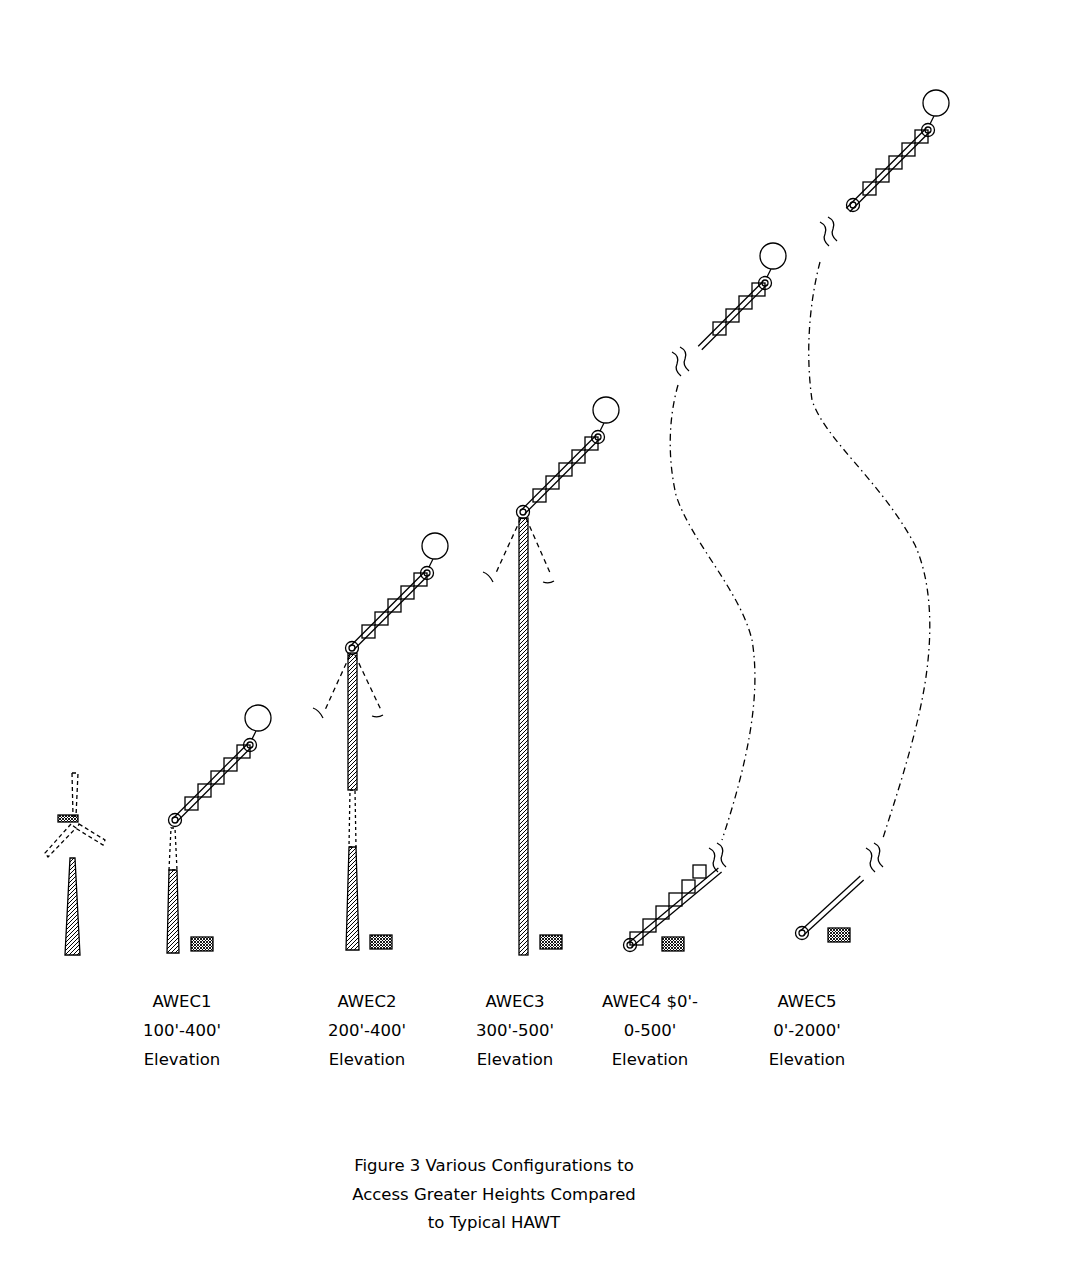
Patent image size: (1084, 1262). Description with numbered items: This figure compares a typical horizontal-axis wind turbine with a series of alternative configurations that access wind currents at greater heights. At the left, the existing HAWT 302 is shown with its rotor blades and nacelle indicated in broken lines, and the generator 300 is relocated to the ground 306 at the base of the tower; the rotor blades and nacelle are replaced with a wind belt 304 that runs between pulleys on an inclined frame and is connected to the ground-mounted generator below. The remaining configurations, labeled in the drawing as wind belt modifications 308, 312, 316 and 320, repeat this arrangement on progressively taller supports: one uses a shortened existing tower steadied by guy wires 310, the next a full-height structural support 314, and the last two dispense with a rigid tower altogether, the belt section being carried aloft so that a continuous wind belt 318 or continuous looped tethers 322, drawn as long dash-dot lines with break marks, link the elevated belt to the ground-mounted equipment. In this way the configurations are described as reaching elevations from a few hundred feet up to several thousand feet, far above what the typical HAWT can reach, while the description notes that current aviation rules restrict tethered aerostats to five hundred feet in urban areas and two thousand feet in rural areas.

The generator 300 is at (78, 777).
The HAWT 302 is at (80, 952).
The wind belt 304 is at (257, 705).
The ground 306 is at (197, 935).
The wind belt modification (AWEC2) 308 is at (442, 535).
The guy wires typical 310 is at (362, 680).
The wind belt modification (AWEC3) 312 is at (604, 395).
The structural support 314 is at (528, 700).
The wind belt modification (AWEC4) 316 is at (768, 243).
The continuous wind belt 318 is at (742, 565).
The wind belt modification (AWEC5) 320 is at (925, 92).
The continuous looped tethers 322 is at (810, 372).